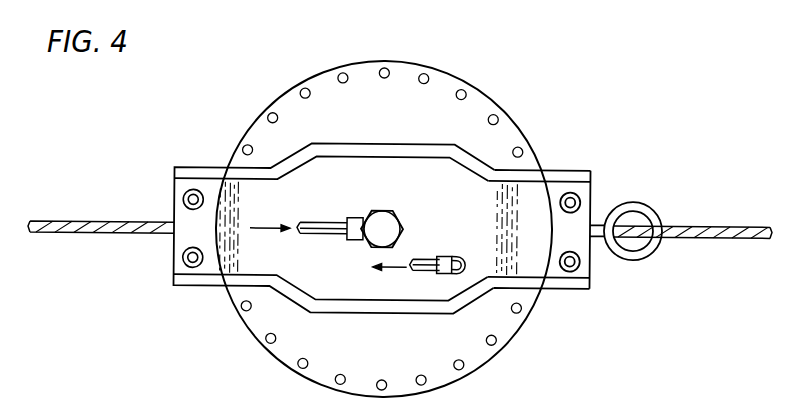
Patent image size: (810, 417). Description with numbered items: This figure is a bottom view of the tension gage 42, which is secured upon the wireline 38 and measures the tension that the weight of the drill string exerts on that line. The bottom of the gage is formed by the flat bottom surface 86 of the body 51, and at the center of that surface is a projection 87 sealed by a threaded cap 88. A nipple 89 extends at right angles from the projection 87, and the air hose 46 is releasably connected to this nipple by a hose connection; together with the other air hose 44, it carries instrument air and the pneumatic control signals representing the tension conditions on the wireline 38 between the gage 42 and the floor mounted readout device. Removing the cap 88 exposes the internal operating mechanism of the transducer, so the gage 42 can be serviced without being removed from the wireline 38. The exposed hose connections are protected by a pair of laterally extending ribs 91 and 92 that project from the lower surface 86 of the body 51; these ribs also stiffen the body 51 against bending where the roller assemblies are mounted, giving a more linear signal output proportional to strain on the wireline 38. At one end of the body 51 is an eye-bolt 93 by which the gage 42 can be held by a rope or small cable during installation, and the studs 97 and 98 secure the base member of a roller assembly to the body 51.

The wireline 38 is at (57, 222).
The tension gage 42 is at (481, 372).
The air hose 44 is at (423, 258).
The air hose 46 is at (315, 222).
The body 51 is at (515, 123).
The bottom surface 86 is at (527, 222).
The projection 87 is at (395, 215).
The threaded cap 88 is at (378, 237).
The nipple 89 is at (352, 218).
The rib 91 is at (565, 172).
The rib 92 is at (563, 287).
The eye-bolt 93 is at (650, 256).
The stud 97 is at (183, 198).
The stud 98 is at (183, 259).